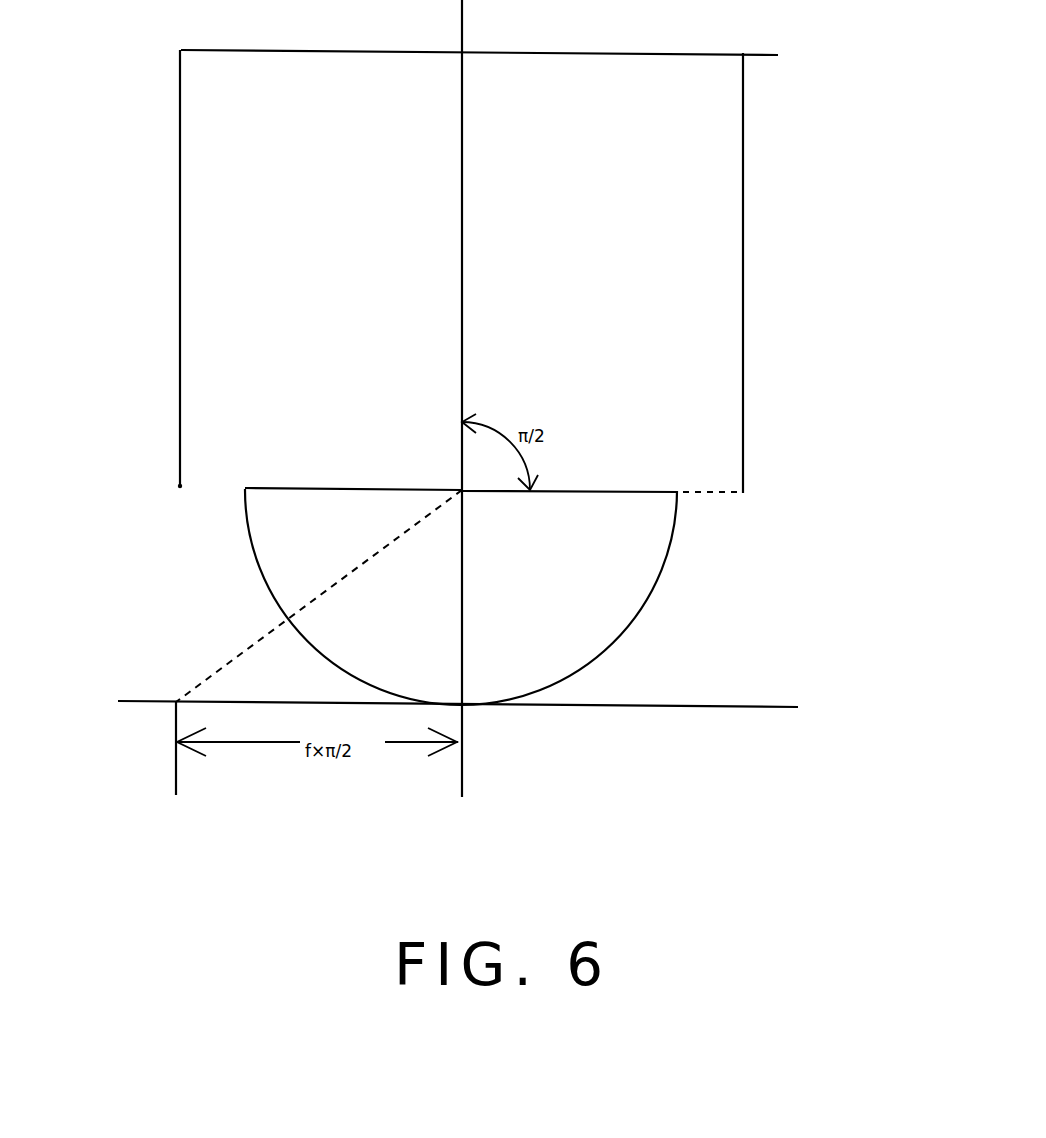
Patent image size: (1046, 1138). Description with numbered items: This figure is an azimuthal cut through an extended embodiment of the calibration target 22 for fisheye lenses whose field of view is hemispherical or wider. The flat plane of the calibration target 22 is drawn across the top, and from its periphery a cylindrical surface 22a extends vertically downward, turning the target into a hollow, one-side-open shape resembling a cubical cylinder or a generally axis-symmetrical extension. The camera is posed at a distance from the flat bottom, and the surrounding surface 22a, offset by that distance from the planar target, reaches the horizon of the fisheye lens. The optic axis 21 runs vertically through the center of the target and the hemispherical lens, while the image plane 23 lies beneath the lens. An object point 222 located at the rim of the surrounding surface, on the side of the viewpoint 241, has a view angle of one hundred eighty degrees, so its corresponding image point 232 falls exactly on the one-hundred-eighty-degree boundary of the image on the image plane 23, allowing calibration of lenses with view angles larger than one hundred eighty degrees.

The optic axis 21 is at (459, 776).
The calibration target 22 is at (765, 58).
The cylindrical surface 22a is at (743, 350).
The object point 222 is at (742, 493).
The viewpoint 241 is at (458, 486).
The image plane 23 is at (755, 712).
The image point 232 is at (175, 702).